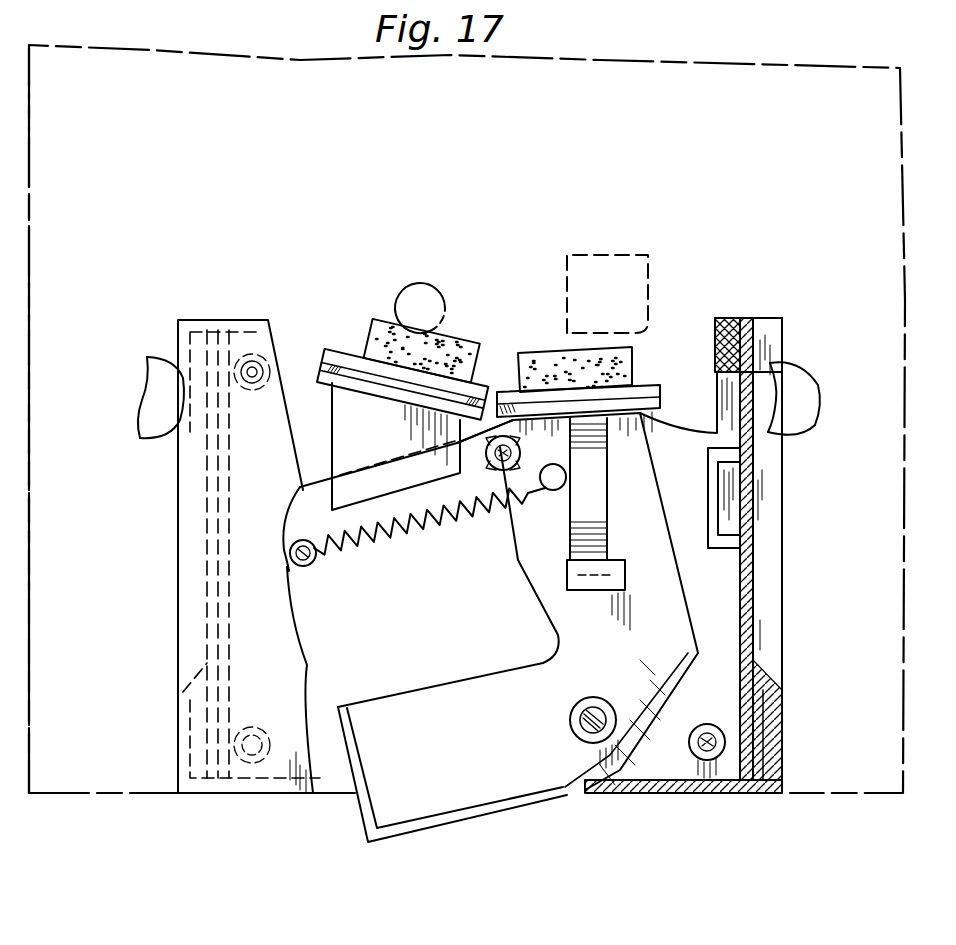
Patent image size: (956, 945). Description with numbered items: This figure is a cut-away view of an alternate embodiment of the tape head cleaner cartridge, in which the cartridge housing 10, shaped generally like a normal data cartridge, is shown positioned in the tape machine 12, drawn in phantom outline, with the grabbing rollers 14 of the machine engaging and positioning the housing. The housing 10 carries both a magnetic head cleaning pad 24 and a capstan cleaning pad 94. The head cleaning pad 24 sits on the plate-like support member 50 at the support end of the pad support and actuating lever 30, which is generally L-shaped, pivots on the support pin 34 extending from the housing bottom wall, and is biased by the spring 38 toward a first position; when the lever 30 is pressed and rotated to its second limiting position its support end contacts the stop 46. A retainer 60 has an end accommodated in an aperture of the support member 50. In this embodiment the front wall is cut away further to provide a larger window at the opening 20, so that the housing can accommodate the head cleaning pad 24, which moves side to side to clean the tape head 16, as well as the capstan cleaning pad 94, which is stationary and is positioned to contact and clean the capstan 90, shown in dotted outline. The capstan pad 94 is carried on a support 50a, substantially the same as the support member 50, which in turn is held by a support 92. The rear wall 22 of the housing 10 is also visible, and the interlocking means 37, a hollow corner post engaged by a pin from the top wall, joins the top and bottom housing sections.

The cartridge housing 10 is at (255, 312).
The tape machine 12 is at (150, 800).
The grabbing rollers 14 is at (145, 375).
The tape head 16 is at (650, 282).
The opening 20 is at (493, 378).
The rear wall 22 is at (648, 794).
The cleaning pad 24 is at (545, 348).
The pad support and actuating lever 30 is at (485, 812).
The support pin 34 is at (585, 745).
The interlocking means 37 is at (693, 762).
The spring 38 is at (448, 540).
The stop 46 is at (738, 562).
The support member 50 is at (661, 373).
The support 50a is at (332, 345).
The retainer 60 is at (575, 520).
The capstan 90 is at (445, 302).
The support 92 is at (326, 418).
The capstan cleaning pad 94 is at (382, 320).